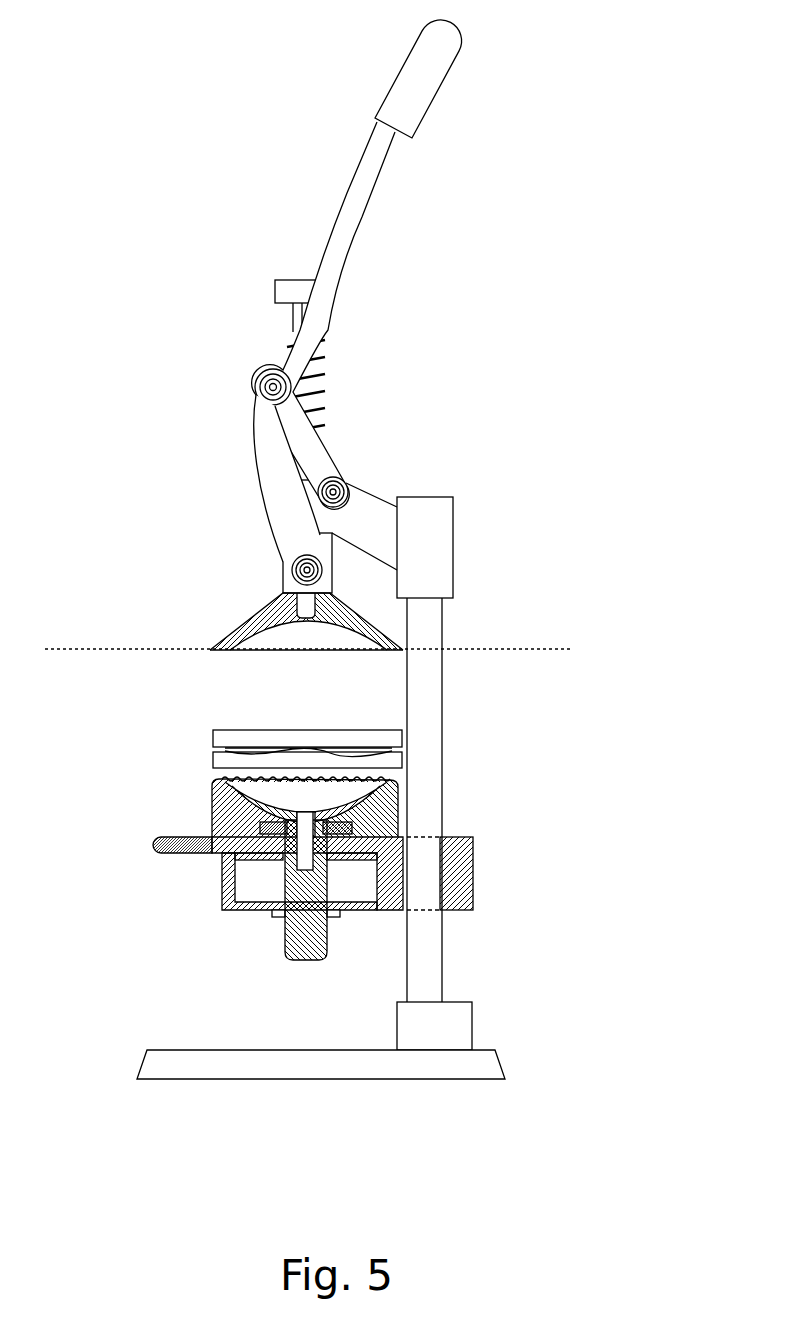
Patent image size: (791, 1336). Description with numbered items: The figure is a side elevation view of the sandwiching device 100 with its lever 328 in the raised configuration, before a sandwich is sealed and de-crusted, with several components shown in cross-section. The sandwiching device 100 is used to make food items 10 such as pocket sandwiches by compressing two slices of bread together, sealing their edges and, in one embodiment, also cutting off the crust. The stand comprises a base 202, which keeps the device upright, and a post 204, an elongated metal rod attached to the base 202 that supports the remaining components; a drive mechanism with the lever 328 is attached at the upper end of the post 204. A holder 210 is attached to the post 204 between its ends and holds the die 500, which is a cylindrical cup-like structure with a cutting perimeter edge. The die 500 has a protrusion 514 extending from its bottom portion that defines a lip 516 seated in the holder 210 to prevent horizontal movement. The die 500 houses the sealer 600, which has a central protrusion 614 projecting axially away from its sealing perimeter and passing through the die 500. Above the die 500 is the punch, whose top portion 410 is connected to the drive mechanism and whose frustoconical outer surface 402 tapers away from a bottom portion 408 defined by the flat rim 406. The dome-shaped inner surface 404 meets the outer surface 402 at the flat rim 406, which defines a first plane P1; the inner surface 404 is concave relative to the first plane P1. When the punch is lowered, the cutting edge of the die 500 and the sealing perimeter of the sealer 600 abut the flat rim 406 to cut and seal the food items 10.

The sandwiching device 100 is at (95, 193).
The lever arm 328 is at (377, 166).
The top portion of the punch 410 is at (263, 578).
The outer surface of the punch 402 is at (236, 608).
The bottom portion of the outer surface 408 is at (198, 631).
The inner surface of the punch 404 is at (266, 640).
The flat rim 406 is at (385, 657).
The first plane P1 is at (93, 650).
The post 204 is at (428, 690).
The base 202 is at (493, 1062).
The food items 10 is at (222, 732).
The sealer 600 is at (230, 778).
The die 500 is at (213, 800).
The lip 516 is at (212, 855).
The protrusion 514 is at (258, 862).
The protrusion of the sealer 614 is at (291, 959).
The holder 210 is at (367, 912).